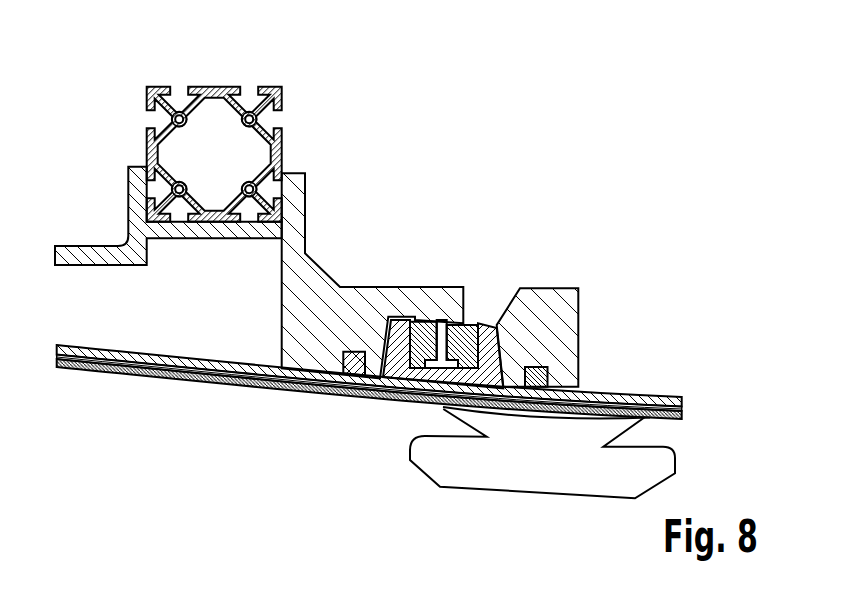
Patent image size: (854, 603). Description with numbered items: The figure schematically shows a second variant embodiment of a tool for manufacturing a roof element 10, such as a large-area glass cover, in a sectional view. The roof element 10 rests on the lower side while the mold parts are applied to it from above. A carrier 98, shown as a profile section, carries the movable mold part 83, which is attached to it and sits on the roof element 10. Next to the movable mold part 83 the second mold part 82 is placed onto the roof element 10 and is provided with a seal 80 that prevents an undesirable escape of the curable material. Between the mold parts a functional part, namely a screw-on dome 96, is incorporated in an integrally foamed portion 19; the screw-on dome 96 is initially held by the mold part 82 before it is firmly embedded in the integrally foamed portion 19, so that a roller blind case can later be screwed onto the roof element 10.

The carrier 98 is at (223, 87).
The movable mold part 83 is at (378, 295).
The screw-on dome 96 is at (432, 320).
The second mold part 82 is at (561, 292).
The seal 80 is at (550, 377).
The roof element 10 is at (187, 385).
The integrally foamed portion 19 is at (390, 393).